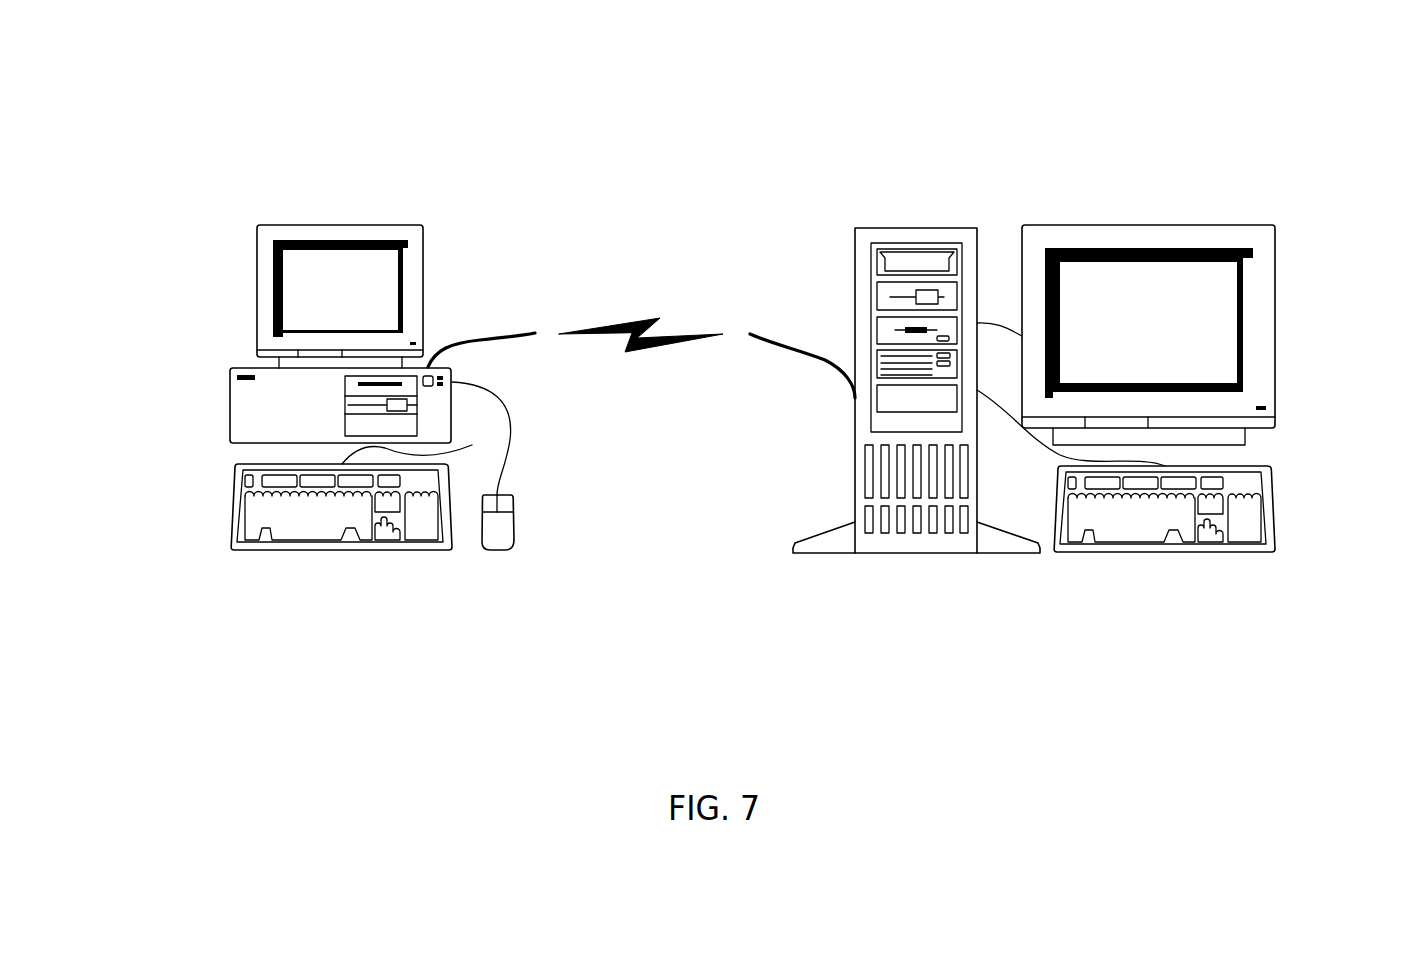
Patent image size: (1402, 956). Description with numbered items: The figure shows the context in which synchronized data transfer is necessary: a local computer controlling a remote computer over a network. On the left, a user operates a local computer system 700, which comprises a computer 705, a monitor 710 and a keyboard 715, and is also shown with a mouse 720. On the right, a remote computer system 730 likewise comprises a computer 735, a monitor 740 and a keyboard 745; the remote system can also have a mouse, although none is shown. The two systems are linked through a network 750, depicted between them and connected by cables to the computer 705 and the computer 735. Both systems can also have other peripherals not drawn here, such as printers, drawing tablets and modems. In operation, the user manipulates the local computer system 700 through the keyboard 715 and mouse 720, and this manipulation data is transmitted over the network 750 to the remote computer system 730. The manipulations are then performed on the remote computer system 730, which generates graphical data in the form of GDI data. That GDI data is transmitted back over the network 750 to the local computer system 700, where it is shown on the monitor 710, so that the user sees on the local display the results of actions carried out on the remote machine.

The local computer system 700 is at (165, 116).
The computer 705 is at (232, 416).
The monitor 710 is at (260, 226).
The keyboard 715 is at (232, 515).
The mouse 720 is at (512, 493).
The remote computer system 730 is at (799, 116).
The computer 735 is at (890, 230).
The monitor 740 is at (1083, 226).
The keyboard 745 is at (1278, 522).
The network 750 is at (615, 325).